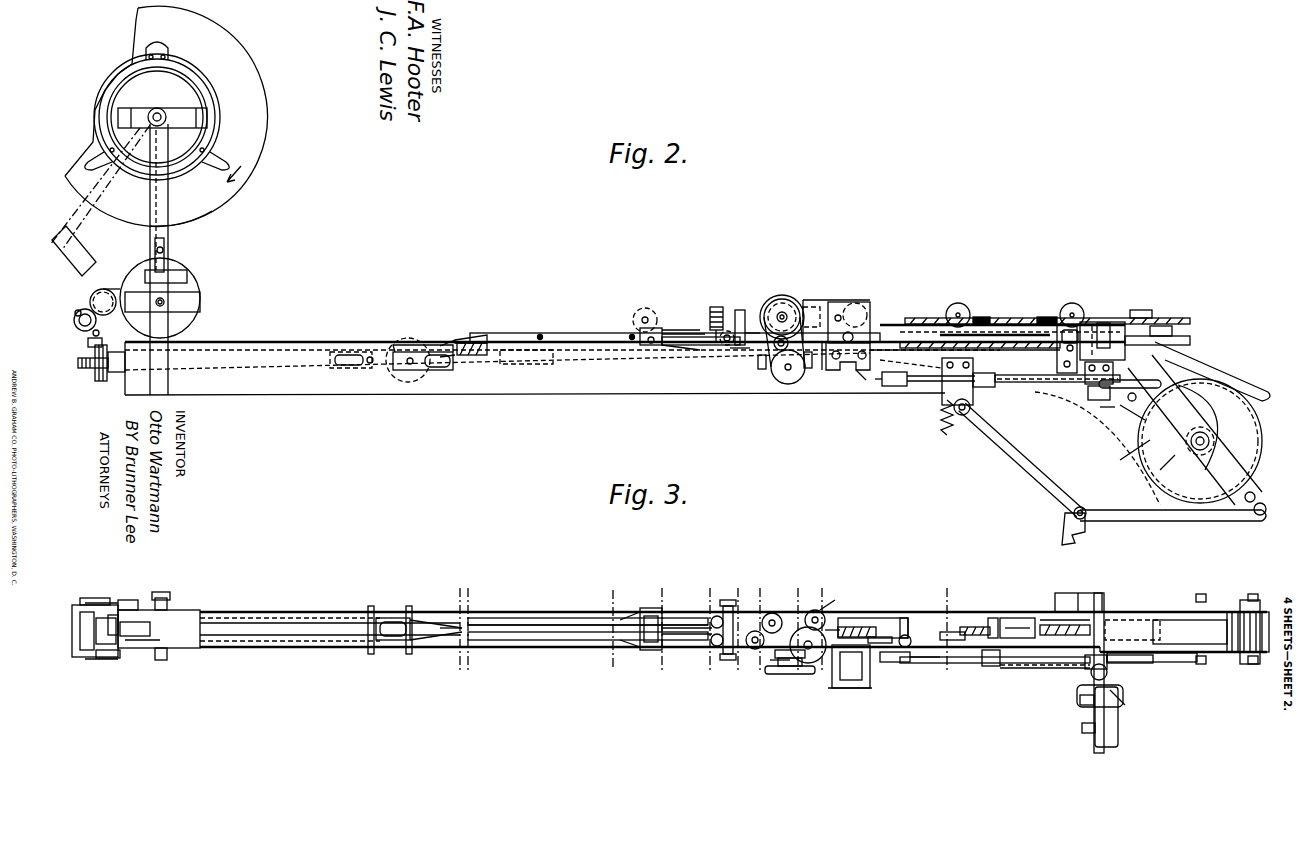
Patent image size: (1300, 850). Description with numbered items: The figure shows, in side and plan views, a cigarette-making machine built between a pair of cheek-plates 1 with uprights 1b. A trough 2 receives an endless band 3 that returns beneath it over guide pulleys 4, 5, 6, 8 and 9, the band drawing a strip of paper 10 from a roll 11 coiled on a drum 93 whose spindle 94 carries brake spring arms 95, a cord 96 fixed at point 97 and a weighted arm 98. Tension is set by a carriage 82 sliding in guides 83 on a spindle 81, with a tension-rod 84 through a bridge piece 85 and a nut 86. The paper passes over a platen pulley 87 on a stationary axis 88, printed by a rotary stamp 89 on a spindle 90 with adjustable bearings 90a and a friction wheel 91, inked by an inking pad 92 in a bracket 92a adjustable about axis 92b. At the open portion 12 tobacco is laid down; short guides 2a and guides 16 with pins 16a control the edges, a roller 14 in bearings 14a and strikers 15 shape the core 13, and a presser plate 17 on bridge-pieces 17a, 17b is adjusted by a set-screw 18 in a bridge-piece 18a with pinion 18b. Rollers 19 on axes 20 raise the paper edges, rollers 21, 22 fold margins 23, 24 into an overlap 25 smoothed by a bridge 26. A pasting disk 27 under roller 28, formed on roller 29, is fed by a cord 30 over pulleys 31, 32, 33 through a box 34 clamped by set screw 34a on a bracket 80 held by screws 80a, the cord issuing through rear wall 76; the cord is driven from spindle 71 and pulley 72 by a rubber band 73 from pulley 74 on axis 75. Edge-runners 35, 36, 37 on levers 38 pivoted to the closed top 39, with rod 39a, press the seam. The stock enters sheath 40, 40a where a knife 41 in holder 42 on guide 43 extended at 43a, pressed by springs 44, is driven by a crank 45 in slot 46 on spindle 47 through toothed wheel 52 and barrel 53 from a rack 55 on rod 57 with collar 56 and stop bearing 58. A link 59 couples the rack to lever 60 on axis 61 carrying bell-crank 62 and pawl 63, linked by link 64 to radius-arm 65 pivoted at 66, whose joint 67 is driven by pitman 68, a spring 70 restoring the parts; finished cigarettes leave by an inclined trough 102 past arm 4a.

In FIG. 2, the cheek-plates 1 is at (306, 396).
In FIG. 3, the cheek-plates 1 is at (286, 598).
In FIG. 2, the uprights 1b is at (168, 193).
In FIG. 3, the uprights 1b is at (168, 600).
In FIG. 2, the trough 2 is at (487, 356).
In FIG. 3, the trough 2 is at (845, 618).
In FIG. 2, the short guides 2a is at (458, 338).
In FIG. 3, the short guides 2a is at (455, 635).
In FIG. 2, the endless band 3 is at (442, 344).
In FIG. 3, the endless band 3 is at (430, 640).
In FIG. 2, the band-driving pulley 4 is at (1140, 462).
In FIG. 3, the band-driving pulley 4 is at (1180, 612).
In FIG. 2, the arm extension 4a is at (1169, 469).
In FIG. 2, the guide pulley 5 is at (1119, 436).
In FIG. 2, the guide pulley 6 is at (808, 370).
In FIG. 2, the guide pulley 8 is at (760, 370).
In FIG. 2, the guide pulley 9 is at (397, 380).
In FIG. 3, the guide pulley 9 is at (396, 617).
In FIG. 2, the strip of paper 10 is at (196, 216).
In FIG. 3, the strip of paper 10 is at (525, 641).
In FIG. 2, the roll 11 is at (262, 156).
In FIG. 2, the open portion of the trough 12 is at (525, 334).
In FIG. 3, the open portion of the trough 12 is at (478, 618).
In FIG. 2, the core of tobacco 13 is at (1002, 318).
In FIG. 2, the roller 14 is at (648, 327).
In FIG. 2, the bearings 14a is at (664, 332).
In FIG. 3, the bearings 14a is at (650, 606).
In FIG. 2, the frames or strikers 15 is at (636, 323).
In FIG. 3, the frames or strikers 15 is at (630, 618).
In FIG. 2, the guides 16 is at (478, 333).
In FIG. 3, the guides 16 is at (560, 618).
In FIG. 2, the rail pin 16a is at (541, 341).
In FIG. 2, the presser plate 17 is at (692, 337).
In FIG. 3, the presser plate 17 is at (702, 582).
In FIG. 2, the bridge-piece 17a is at (684, 307).
In FIG. 3, the bridge-piece 17a is at (670, 652).
In FIG. 2, the arm 17b is at (681, 364).
In FIG. 3, the arm 17b is at (676, 620).
In FIG. 2, the set-screw 18 is at (740, 310).
In FIG. 3, the set-screw 18 is at (604, 628).
In FIG. 2, the bridge-piece 18a is at (735, 352).
In FIG. 2, the pinion 18b is at (726, 346).
In FIG. 2, the rollers 19 is at (713, 306).
In FIG. 3, the rollers 19 is at (712, 713).
In FIG. 2, the vertical axes 20 is at (722, 306).
In FIG. 3, the vertical axes 20 is at (715, 627).
In FIG. 2, the vertical roller 21 is at (740, 350).
In FIG. 3, the vertical roller 21 is at (780, 537).
In FIG. 3, the vertical roller 22 is at (786, 555).
In FIG. 3, the lower margin 23 is at (788, 637).
In FIG. 3, the upper margin 24 is at (808, 638).
In FIG. 3, the overlap 25 is at (947, 630).
In FIG. 2, the short bridge 26 is at (1056, 350).
In FIG. 3, the short bridge 26 is at (1093, 592).
In FIG. 2, the pasting disk 27 is at (824, 372).
In FIG. 3, the pasting disk 27 is at (804, 671).
In FIG. 2, the vertical roller 28 is at (836, 302).
In FIG. 3, the vertical roller 28 is at (830, 615).
In FIG. 3, the vertical roller 29 is at (822, 608).
In FIG. 2, the cord 30 is at (813, 308).
In FIG. 2, the guide pulley 31 is at (806, 306).
In FIG. 3, the guide pulley 31 is at (790, 676).
In FIG. 2, the grooved guide roller 32 is at (863, 312).
In FIG. 3, the grooved guide roller 32 is at (860, 680).
In FIG. 3, the guide roller 33 is at (820, 672).
In FIG. 2, the box 34 is at (850, 303).
In FIG. 3, the box 34 is at (870, 672).
In FIG. 2, the set screw 34a is at (965, 355).
In FIG. 3, the set screw 34a is at (850, 690).
In FIG. 3, the edge-runner 35 is at (858, 627).
In FIG. 2, the edge-runner 36 is at (962, 308).
In FIG. 3, the edge-runner 36 is at (968, 626).
In FIG. 2, the edge-runner 37 is at (1070, 305).
In FIG. 3, the edge-runner 37 is at (1060, 618).
In FIG. 2, the levers 38 is at (905, 320).
In FIG. 3, the levers 38 is at (905, 618).
In FIG. 2, the closed top 39 is at (945, 340).
In FIG. 3, the closed top 39 is at (876, 634).
In FIG. 3, the rod 39a is at (925, 660).
In FIG. 2, the tubular guide or sheath 40 is at (1084, 322).
In FIG. 2, the continuation of guide-sheath 40a is at (1122, 322).
In FIG. 3, the continuation of guide-sheath 40a is at (1160, 632).
In FIG. 3, the knife 41 is at (1108, 676).
In FIG. 2, the holder 42 is at (1108, 322).
In FIG. 3, the holder 42 is at (1118, 725).
In FIG. 2, the guide 43 is at (1095, 326).
In FIG. 3, the guide 43 is at (1098, 753).
In FIG. 3, the knife-guide extension 43a is at (1110, 620).
In FIG. 3, the adjustable springs 44 is at (1082, 733).
In FIG. 3, the crank 45 is at (1080, 705).
In FIG. 3, the transverse slot 46 is at (1124, 704).
In FIG. 2, the spindle 47 is at (1098, 410).
In FIG. 3, the spindle 47 is at (1123, 695).
In FIG. 2, the toothed wheel 52 is at (1092, 400).
In FIG. 3, the toothed wheel 52 is at (1085, 665).
In FIG. 2, the hollow barrel 53 is at (1100, 402).
In FIG. 2, the rack 55 is at (1040, 384).
In FIG. 3, the rack 55 is at (1020, 668).
In FIG. 2, the screw collar 56 is at (895, 388).
In FIG. 3, the screw collar 56 is at (898, 664).
In FIG. 2, the rack rod 57 is at (922, 383).
In FIG. 3, the rack rod 57 is at (962, 665).
In FIG. 2, the bearing 58 is at (988, 389).
In FIG. 3, the bearing 58 is at (988, 668).
In FIG. 2, the link 59 is at (1129, 401).
In FIG. 3, the link 59 is at (1140, 664).
In FIG. 2, the lever 60 is at (1220, 470).
In FIG. 3, the lever 60 is at (1185, 662).
In FIG. 2, the axis 61 is at (1212, 442).
In FIG. 3, the axis 61 is at (1218, 676).
In FIG. 2, the bell-crank 62 is at (1258, 516).
In FIG. 2, the gripping pawl 63 is at (1247, 502).
In FIG. 2, the link 64 is at (1118, 509).
In FIG. 2, the radius-arm 65 is at (1014, 456).
In FIG. 2, the pivot 66 is at (962, 418).
In FIG. 2, the pivotal joint 67 is at (1085, 492).
In FIG. 2, the pitman 68 is at (1064, 527).
In FIG. 2, the spring 70 is at (944, 430).
In FIG. 2, the spindle 71 is at (781, 296).
In FIG. 2, the pulley 72 is at (768, 304).
In FIG. 2, the endless indiarubber band 73 is at (787, 300).
In FIG. 2, the pulley 74 is at (788, 385).
In FIG. 2, the axis 75 is at (779, 351).
In FIG. 3, the rear wall 76 is at (812, 665).
In FIG. 2, the bracket 80 is at (848, 372).
In FIG. 2, the screws 80a is at (864, 381).
In FIG. 2, the spindle 81 is at (412, 366).
In FIG. 3, the spindle 81 is at (412, 618).
In FIG. 2, the carriage 82 is at (396, 352).
In FIG. 3, the carriage 82 is at (374, 612).
In FIG. 2, the guides 83 is at (350, 380).
In FIG. 2, the tension-rod 84 is at (256, 370).
In FIG. 3, the tension-rod 84 is at (308, 625).
In FIG. 2, the bridge piece 85 is at (130, 374).
In FIG. 3, the bridge piece 85 is at (130, 600).
In FIG. 2, the nut 86 is at (100, 383).
In FIG. 2, the pulley 87 is at (200, 312).
In FIG. 3, the pulley 87 is at (200, 612).
In FIG. 2, the stationary axis 88 is at (166, 300).
In FIG. 3, the stationary axis 88 is at (165, 594).
In FIG. 2, the rotary stamp 89 is at (110, 290).
In FIG. 3, the rotary stamp 89 is at (118, 618).
In FIG. 2, the rotary spindle 90 is at (102, 323).
In FIG. 3, the rotary spindle 90 is at (112, 612).
In FIG. 3, the adjustable pivot-bearings 90a is at (157, 628).
In FIG. 2, the friction wheel 91 is at (100, 290).
In FIG. 3, the friction wheel 91 is at (135, 628).
In FIG. 2, the inking pad 92 is at (106, 340).
In FIG. 3, the inking pad 92 is at (80, 612).
In FIG. 2, the bracket 92a is at (82, 348).
In FIG. 2, the axis 92b is at (77, 300).
In FIG. 3, the axis 92b is at (95, 600).
In FIG. 2, the drum 93 is at (200, 96).
In FIG. 2, the spindle 94 is at (207, 113).
In FIG. 2, the spring arms 95 is at (150, 113).
In FIG. 2, the cord 96 is at (222, 254).
In FIG. 2, the fixed point 97 is at (166, 241).
In FIG. 2, the weighted arm 98 is at (220, 276).
In FIG. 2, the inclined trough 102 is at (1215, 370).